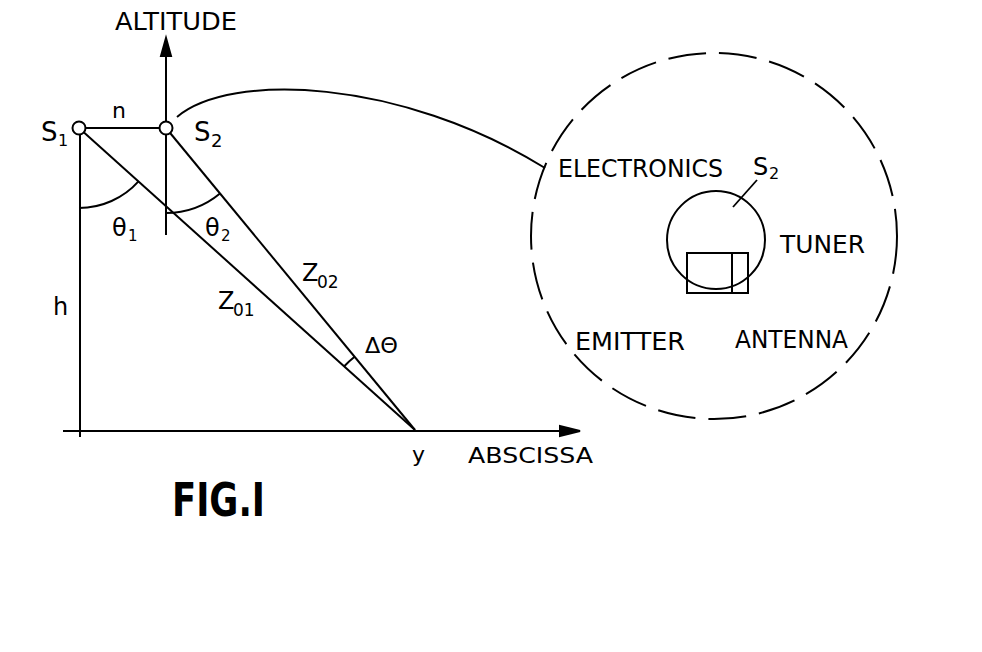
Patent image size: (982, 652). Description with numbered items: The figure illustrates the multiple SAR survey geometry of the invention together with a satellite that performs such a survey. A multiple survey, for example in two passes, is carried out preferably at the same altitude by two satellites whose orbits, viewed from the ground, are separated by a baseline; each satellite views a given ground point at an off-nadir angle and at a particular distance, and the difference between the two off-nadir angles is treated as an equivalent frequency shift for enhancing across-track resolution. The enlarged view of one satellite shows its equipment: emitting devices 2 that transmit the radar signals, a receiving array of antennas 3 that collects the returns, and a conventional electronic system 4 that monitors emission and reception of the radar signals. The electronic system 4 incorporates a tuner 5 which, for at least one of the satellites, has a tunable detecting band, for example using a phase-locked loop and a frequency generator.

The emitting device 2 is at (693, 292).
The receiving array of antennas 3 is at (740, 293).
The electronic system 4 is at (703, 263).
The tuner 5 is at (752, 272).